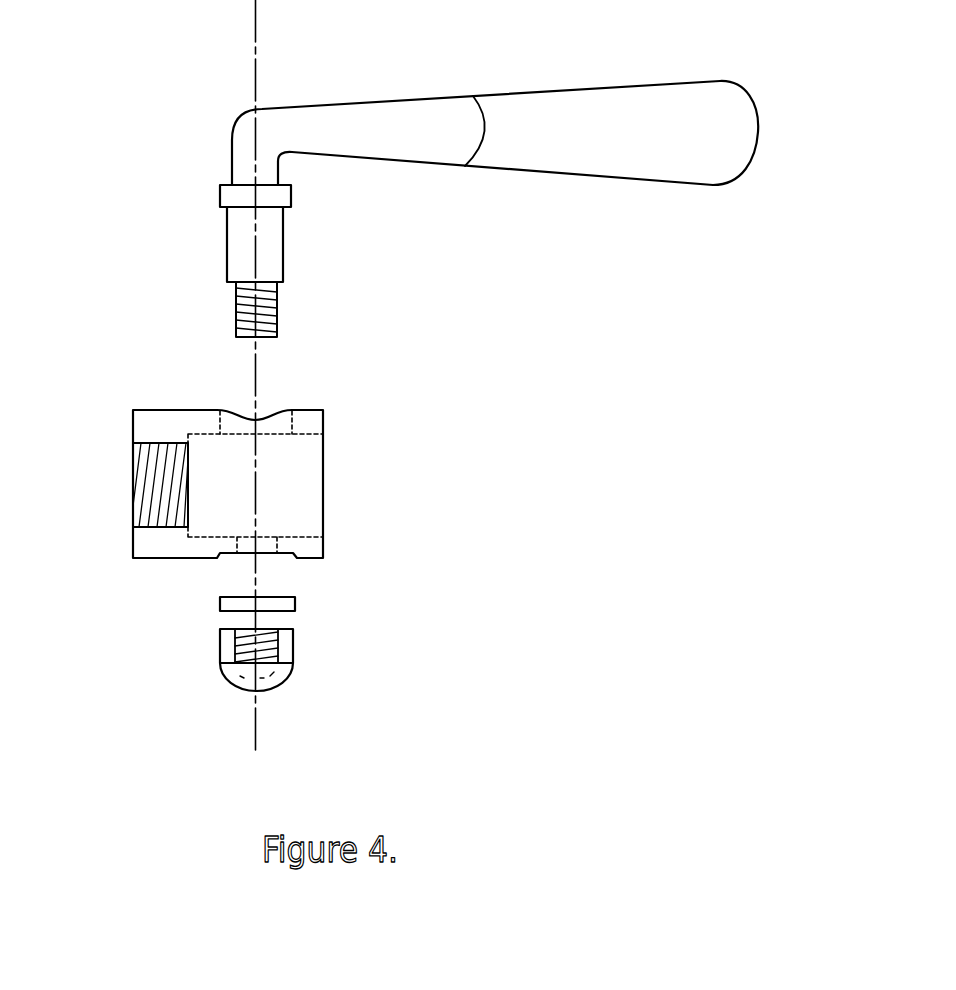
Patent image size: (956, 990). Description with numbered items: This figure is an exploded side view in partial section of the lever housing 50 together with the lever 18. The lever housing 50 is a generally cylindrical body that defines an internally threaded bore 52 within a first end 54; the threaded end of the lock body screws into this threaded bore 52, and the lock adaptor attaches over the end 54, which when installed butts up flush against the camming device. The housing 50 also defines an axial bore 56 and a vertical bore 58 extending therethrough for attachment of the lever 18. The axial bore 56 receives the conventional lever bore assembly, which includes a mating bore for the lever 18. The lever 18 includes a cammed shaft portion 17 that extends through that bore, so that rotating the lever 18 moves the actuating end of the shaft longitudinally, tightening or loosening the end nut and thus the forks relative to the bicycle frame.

The cammed shaft portion 17 is at (243, 252).
The lever 18 is at (602, 139).
The lever housing 50 is at (237, 488).
The internally threaded bore 52 is at (163, 500).
The first end 54 is at (168, 425).
The axial bore 56 is at (300, 493).
The vertical bore 58 is at (272, 423).